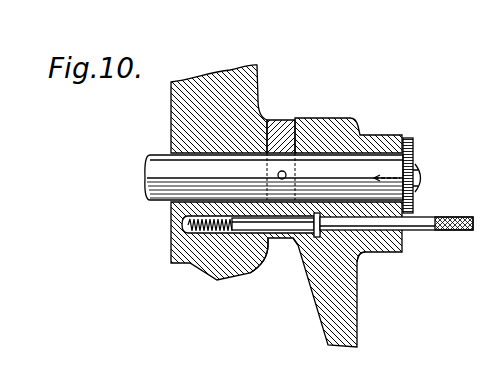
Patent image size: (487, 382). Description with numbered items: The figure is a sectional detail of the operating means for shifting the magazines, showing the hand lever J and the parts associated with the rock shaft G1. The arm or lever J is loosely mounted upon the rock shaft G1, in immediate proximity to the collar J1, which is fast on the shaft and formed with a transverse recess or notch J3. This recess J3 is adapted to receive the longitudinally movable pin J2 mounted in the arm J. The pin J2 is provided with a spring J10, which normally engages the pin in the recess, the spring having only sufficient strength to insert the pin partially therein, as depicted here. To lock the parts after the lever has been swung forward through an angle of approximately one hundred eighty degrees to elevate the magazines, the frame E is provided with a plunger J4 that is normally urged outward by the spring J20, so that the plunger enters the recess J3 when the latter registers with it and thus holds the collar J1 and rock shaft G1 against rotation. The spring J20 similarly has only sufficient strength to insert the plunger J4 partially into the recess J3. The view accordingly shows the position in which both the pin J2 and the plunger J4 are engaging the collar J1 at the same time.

The frame E is at (170, 100).
The rock shaft G1 is at (175, 170).
The collar J1 is at (290, 119).
The pin J2 is at (452, 217).
The spring J20 is at (185, 233).
The plunger J4 is at (237, 236).
The recess J3 is at (283, 240).
The spring J10 is at (360, 258).
The hand lever J is at (357, 305).